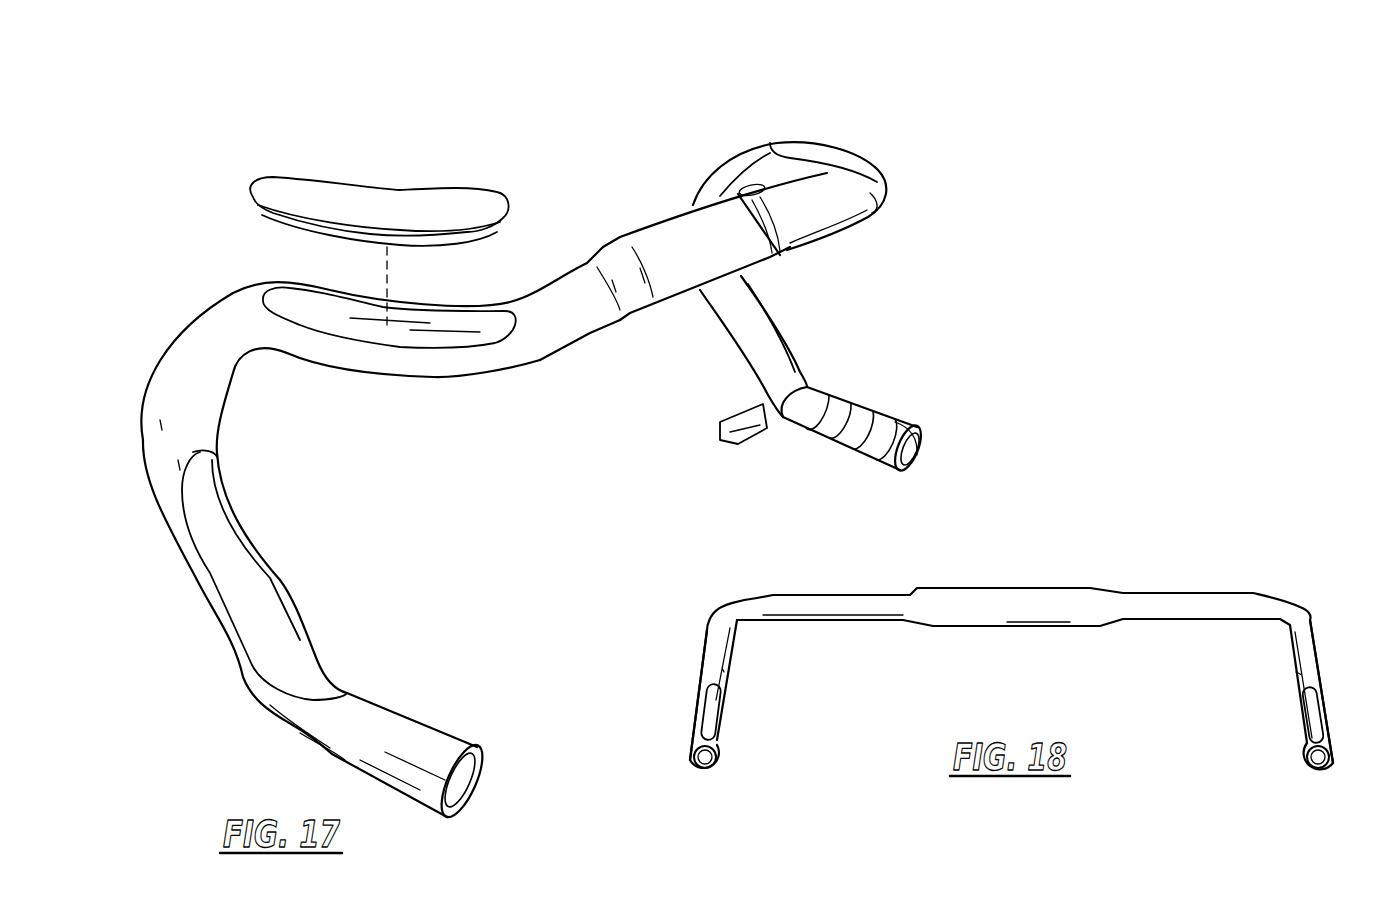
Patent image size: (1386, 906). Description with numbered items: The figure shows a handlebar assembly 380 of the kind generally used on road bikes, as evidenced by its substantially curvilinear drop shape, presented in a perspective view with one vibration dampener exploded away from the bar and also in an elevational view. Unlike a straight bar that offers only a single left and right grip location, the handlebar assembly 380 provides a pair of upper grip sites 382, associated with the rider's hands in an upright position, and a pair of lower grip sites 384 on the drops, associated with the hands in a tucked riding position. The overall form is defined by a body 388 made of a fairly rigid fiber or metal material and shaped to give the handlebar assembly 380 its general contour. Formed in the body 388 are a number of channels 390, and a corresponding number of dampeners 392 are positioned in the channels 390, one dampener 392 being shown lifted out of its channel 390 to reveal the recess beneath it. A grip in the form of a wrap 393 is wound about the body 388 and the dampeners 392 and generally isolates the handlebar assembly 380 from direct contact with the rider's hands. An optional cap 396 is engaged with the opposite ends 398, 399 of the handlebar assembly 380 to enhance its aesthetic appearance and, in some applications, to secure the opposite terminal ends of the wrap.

In FIG. 17, the handlebar assembly 380 is at (597, 186).
In FIG. 18, the handlebar assembly 380 is at (1257, 490).
In FIG. 17, the upper grip sites 382 is at (908, 183).
In FIG. 18, the upper grip sites 382 is at (1352, 528).
In FIG. 17, the lower grip sites 384 is at (828, 262).
In FIG. 18, the lower grip sites 384 is at (1272, 653).
In FIG. 17, the body 388 is at (540, 360).
In FIG. 18, the body 388 is at (1192, 558).
In FIG. 17, the channels 390 is at (845, 95).
In FIG. 18, the channels 390 is at (1278, 600).
In FIG. 17, the dampeners 392 is at (393, 200).
In FIG. 18, the dampeners 392 is at (1308, 713).
In FIG. 17, the wrap 393 is at (755, 418).
In FIG. 17, the cap 396 is at (920, 445).
In FIG. 17, the end 398 is at (913, 427).
In FIG. 18, the end 398 is at (1306, 760).
In FIG. 17, the end 399 is at (473, 778).
In FIG. 18, the end 399 is at (718, 757).